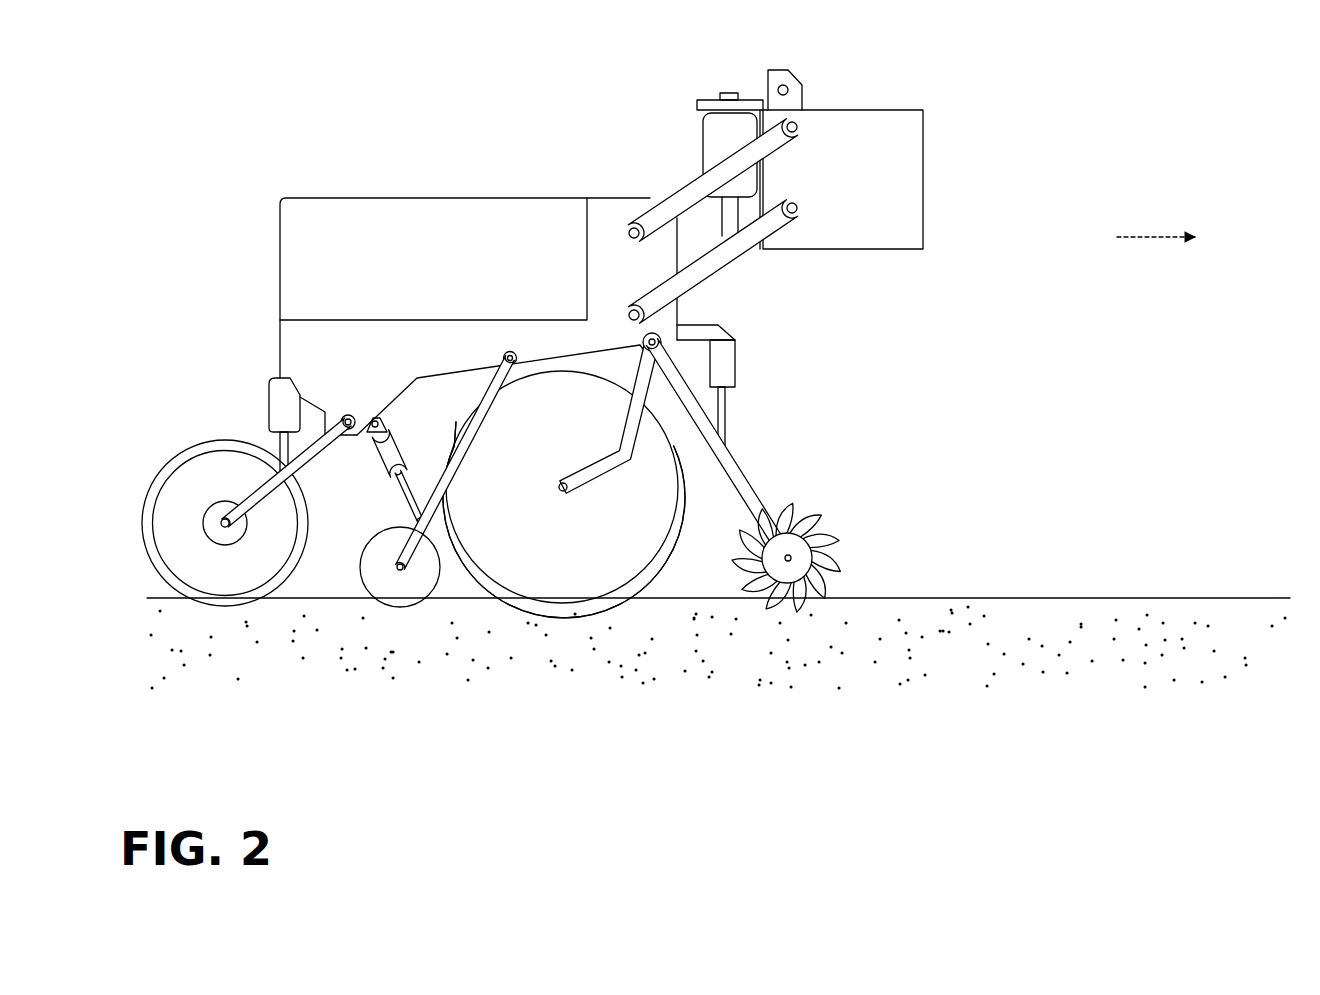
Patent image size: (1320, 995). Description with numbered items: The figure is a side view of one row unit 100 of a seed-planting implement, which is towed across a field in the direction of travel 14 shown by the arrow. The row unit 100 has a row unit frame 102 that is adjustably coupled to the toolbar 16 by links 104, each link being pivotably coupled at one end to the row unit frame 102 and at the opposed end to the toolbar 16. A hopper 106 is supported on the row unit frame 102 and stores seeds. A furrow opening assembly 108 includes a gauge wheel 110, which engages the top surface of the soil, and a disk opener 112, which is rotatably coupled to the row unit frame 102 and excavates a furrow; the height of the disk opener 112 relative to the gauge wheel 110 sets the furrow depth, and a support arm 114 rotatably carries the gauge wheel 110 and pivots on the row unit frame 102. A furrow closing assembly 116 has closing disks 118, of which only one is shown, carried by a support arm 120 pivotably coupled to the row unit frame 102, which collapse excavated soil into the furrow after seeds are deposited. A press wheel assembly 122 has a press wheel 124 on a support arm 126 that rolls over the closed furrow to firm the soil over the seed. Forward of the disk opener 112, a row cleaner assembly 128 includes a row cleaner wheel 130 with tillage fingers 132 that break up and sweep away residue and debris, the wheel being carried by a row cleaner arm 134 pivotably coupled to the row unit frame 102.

The direction of travel 14 is at (1155, 236).
The toolbar 16 is at (835, 250).
The row unit 100 is at (343, 93).
The row unit frame 102 is at (645, 207).
The links 104 is at (775, 206).
The hopper 106 is at (411, 198).
The furrow opening assembly 108 is at (683, 520).
The gauge wheel 110 is at (678, 462).
The disk opener 112 is at (517, 610).
The support arm 114 is at (593, 481).
The furrow closing assembly 116 is at (380, 603).
The closing disks 118 is at (360, 562).
The support arm 120 is at (460, 385).
The press wheel assembly 122 is at (181, 431).
The press wheel 124 is at (142, 527).
The support arm 126 is at (253, 488).
The row cleaner assembly 128 is at (820, 507).
The row cleaner wheel 130 is at (810, 545).
The fingers 132 is at (835, 552).
The row cleaner arm 134 is at (747, 477).